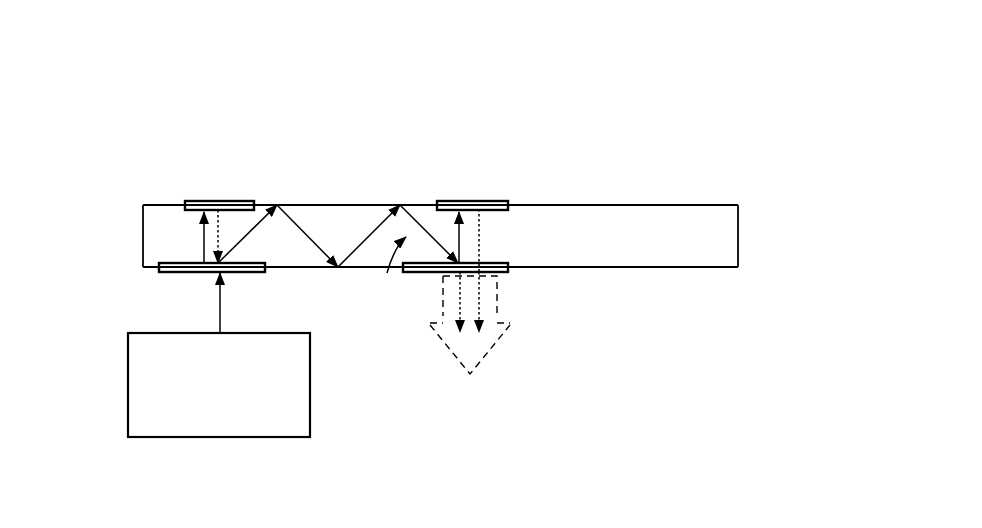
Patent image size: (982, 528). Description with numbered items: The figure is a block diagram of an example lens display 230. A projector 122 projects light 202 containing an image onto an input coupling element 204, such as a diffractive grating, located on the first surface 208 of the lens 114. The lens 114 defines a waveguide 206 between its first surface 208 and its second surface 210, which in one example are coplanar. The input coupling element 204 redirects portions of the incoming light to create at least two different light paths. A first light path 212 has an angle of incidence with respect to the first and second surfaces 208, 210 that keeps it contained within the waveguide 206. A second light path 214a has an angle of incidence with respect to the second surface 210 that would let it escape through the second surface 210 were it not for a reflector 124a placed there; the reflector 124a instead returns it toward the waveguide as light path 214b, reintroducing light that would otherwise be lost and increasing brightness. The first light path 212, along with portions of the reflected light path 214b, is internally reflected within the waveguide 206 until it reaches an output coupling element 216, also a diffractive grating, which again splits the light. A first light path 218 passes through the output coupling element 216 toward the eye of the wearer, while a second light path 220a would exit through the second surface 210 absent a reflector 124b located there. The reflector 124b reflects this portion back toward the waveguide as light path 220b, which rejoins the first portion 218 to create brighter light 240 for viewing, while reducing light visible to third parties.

The lens display 230 is at (143, 66).
The lens 114 is at (738, 237).
The second surface 210 is at (667, 203).
The first surface 208 is at (667, 268).
The reflector 124a is at (208, 200).
The reflector 124b is at (473, 200).
The input coupling element 204 is at (180, 274).
The waveguide 206 is at (445, 276).
The projector 122 is at (310, 383).
The light 202 is at (220, 300).
The first light path 212 is at (236, 238).
The second light path 214a is at (216, 252).
The reflected light path 214b is at (220, 243).
The second light path 220a is at (460, 237).
The reflected light path 220b is at (482, 223).
The output coupling element 216 is at (495, 274).
The first light path 218 is at (457, 300).
The brighter light 240 is at (482, 357).